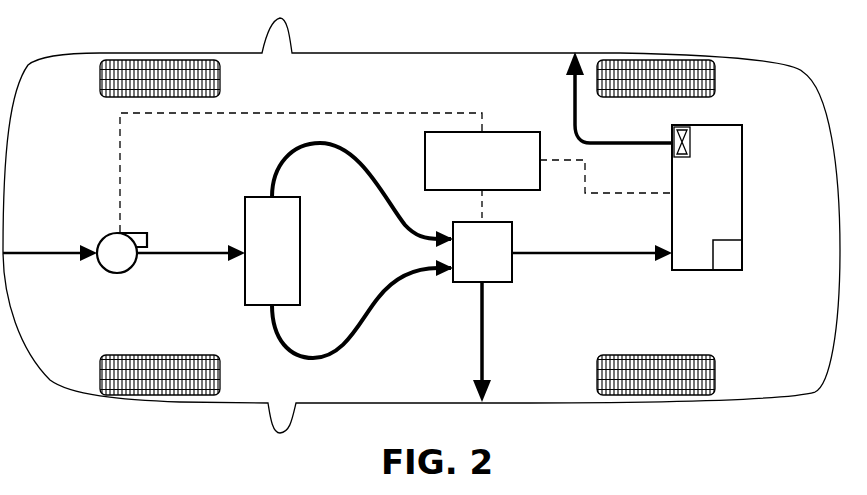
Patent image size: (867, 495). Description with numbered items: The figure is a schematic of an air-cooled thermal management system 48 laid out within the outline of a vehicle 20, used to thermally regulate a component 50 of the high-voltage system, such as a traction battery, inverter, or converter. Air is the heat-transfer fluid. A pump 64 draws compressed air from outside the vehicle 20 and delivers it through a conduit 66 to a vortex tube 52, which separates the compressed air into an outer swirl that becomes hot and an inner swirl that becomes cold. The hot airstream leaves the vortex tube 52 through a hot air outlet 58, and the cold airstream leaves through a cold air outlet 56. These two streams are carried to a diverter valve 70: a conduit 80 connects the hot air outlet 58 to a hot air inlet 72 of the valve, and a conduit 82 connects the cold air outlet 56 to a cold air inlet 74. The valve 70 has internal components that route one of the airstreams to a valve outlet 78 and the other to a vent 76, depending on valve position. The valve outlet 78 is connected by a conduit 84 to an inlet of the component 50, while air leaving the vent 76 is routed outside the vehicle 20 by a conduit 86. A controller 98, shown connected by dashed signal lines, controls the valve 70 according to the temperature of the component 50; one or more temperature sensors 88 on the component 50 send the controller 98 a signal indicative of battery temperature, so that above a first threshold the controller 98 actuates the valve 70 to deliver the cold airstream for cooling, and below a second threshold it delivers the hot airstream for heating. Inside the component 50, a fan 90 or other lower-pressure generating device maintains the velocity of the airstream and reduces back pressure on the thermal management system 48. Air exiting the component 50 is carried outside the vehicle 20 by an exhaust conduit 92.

The vehicle 20 is at (390, 53).
The thermal management system 48 is at (240, 150).
The component 50 is at (708, 193).
The vortex tube 52 is at (304, 253).
The cold air outlet 56 is at (262, 309).
The hot air outlet 58 is at (265, 196).
The pump 64 is at (115, 274).
The conduit 66 is at (212, 246).
The diverter valve 70 is at (505, 268).
The hot air inlet 72 is at (446, 231).
The cold air inlet 74 is at (446, 278).
The vent 76 is at (473, 284).
The valve outlet 78 is at (514, 246).
The conduit 80 is at (340, 137).
The conduit 82 is at (355, 350).
The conduit 84 is at (570, 256).
The conduit 86 is at (485, 342).
The temperature sensor 88 is at (728, 272).
The fan 90 is at (692, 143).
The exhaust conduit 92 is at (572, 91).
The controller 98 is at (493, 131).